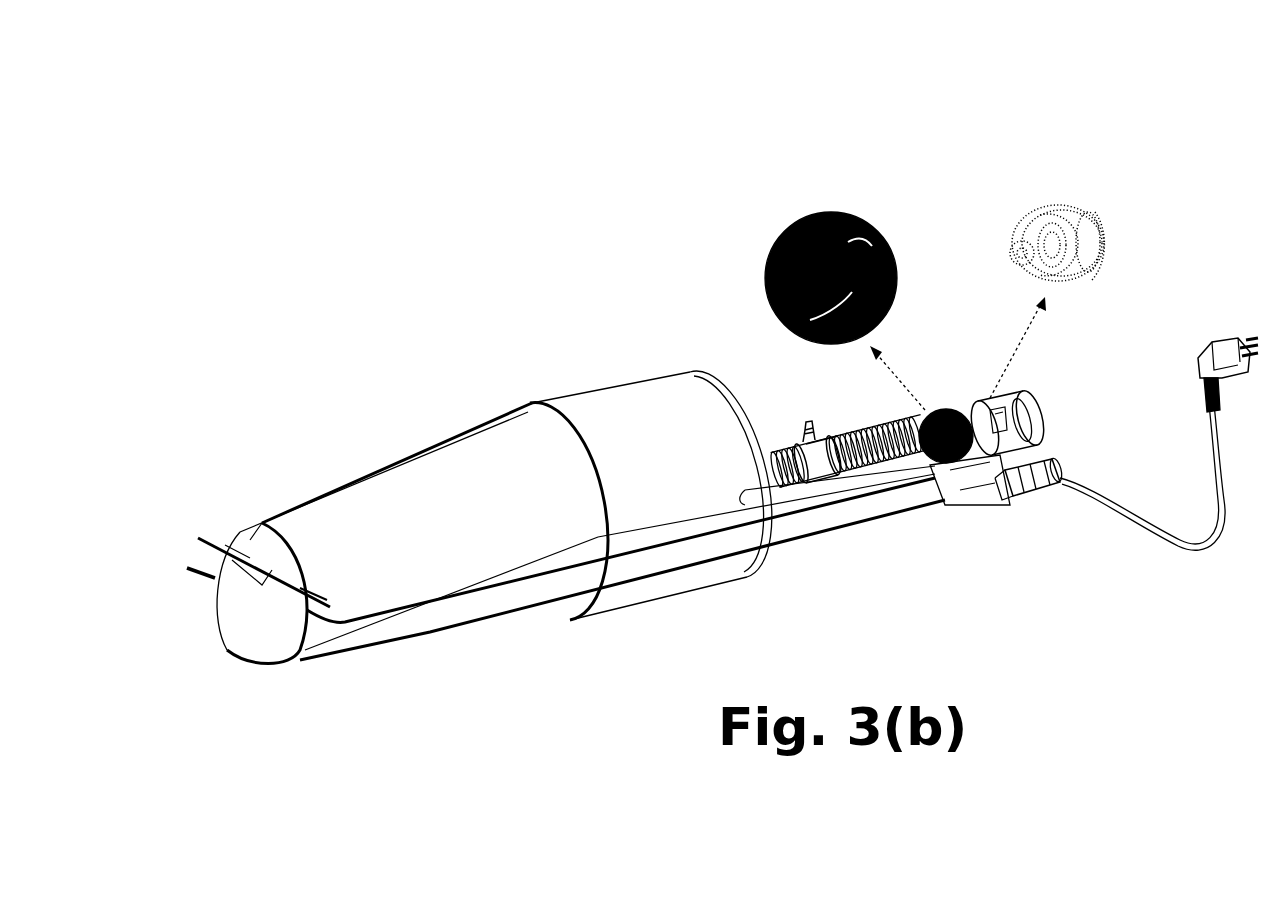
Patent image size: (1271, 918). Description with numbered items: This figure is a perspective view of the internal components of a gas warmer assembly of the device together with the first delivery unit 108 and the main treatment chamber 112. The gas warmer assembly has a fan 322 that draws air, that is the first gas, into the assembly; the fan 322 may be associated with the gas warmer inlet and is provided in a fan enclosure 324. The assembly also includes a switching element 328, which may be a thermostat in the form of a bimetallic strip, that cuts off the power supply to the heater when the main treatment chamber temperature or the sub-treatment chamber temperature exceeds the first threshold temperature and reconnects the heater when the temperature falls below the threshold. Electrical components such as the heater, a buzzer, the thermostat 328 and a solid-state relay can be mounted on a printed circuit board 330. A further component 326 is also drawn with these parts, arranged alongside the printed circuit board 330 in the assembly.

The first delivery unit 108 is at (808, 388).
The main treatment chamber 112 is at (532, 403).
The fan 322 is at (1017, 228).
The fan enclosure 324 is at (1097, 228).
The power socket 326 is at (1020, 507).
The switching element 328 is at (840, 213).
The printed circuit board 330 is at (975, 508).